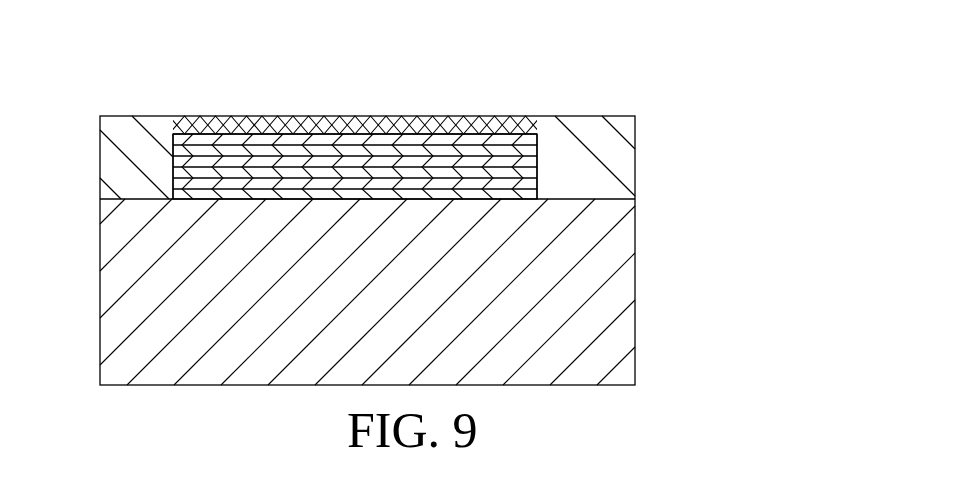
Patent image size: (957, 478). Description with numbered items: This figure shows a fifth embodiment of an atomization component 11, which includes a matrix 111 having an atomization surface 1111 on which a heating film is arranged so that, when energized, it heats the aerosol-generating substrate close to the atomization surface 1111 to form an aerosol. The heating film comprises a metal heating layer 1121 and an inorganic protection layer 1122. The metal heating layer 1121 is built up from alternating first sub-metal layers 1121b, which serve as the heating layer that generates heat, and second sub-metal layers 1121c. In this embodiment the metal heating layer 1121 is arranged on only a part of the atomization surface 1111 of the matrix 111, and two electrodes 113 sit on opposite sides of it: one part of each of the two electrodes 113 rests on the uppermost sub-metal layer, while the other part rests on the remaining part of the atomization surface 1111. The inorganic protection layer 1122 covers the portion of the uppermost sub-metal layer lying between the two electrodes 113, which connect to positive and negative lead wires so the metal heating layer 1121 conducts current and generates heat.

The atomization component 11 is at (72, 80).
The matrix 111 is at (567, 325).
The atomization surface 1111 is at (182, 201).
The metal heating layer 1121 is at (486, 174).
The first sub-metal layer 1121b is at (537, 138).
The second sub-metal layer 1121c is at (537, 148).
The inorganic protection layer 1122 is at (325, 128).
The electrodes 113 is at (175, 128).